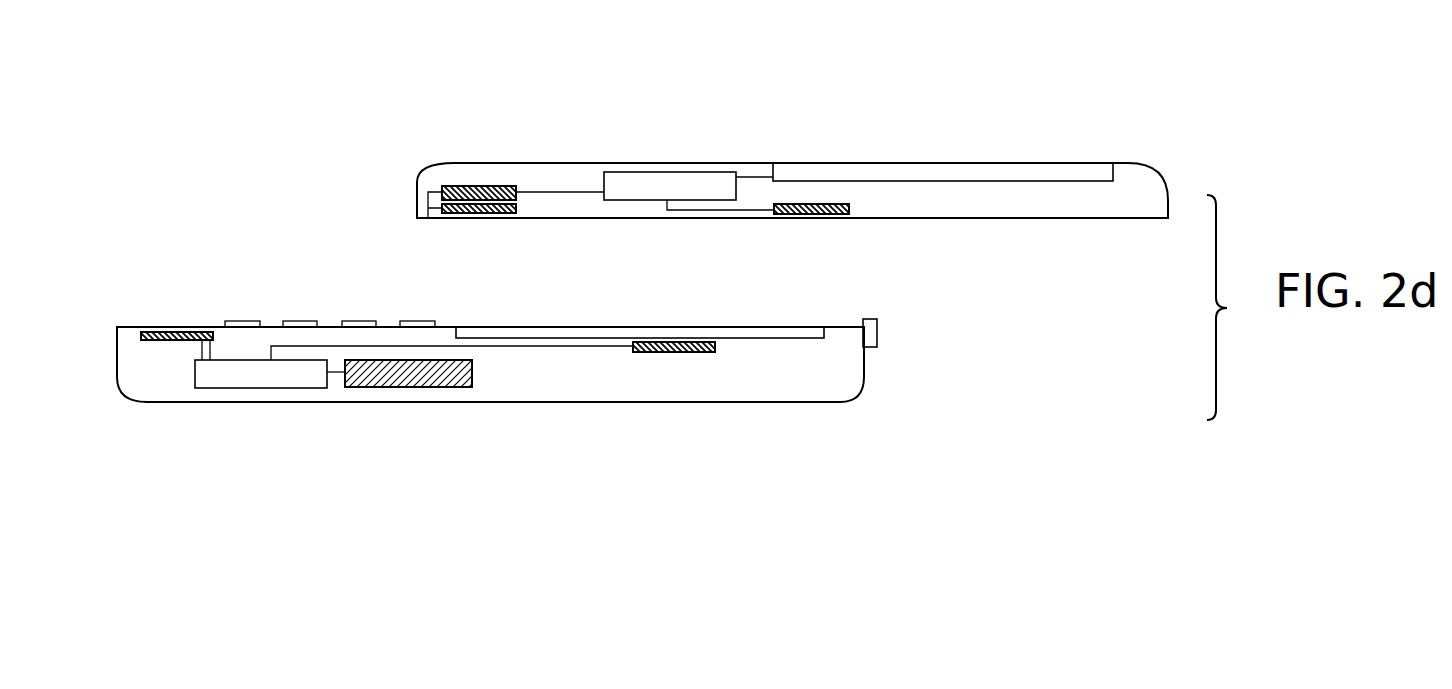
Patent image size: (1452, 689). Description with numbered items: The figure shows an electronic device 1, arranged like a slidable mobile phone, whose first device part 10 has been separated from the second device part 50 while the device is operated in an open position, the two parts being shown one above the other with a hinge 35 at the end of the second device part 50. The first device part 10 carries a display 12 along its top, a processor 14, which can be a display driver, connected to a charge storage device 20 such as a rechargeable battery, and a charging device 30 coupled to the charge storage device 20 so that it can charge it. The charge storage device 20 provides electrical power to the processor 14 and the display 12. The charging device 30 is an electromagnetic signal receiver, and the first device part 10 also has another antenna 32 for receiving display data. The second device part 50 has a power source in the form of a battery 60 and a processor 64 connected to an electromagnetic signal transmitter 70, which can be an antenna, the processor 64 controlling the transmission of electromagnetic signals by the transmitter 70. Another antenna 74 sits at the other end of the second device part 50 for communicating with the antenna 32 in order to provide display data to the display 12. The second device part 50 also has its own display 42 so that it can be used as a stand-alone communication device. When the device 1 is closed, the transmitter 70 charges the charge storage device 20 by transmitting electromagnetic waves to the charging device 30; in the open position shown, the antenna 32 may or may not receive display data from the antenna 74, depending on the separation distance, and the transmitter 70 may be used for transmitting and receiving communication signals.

The electronic device 1 is at (284, 118).
The first device part 10 is at (960, 218).
The display 12 is at (923, 172).
The processor 14 is at (667, 175).
The charge storage device 20 is at (485, 188).
The charging device 30 is at (478, 213).
The antenna 32 is at (803, 215).
The hinge 35 is at (878, 337).
The display 42 is at (643, 327).
The second device part 50 is at (574, 403).
The battery 60 is at (422, 388).
The processor 64 is at (290, 387).
The electromagnetic signal transmitter 70 is at (168, 332).
The antenna 74 is at (718, 348).